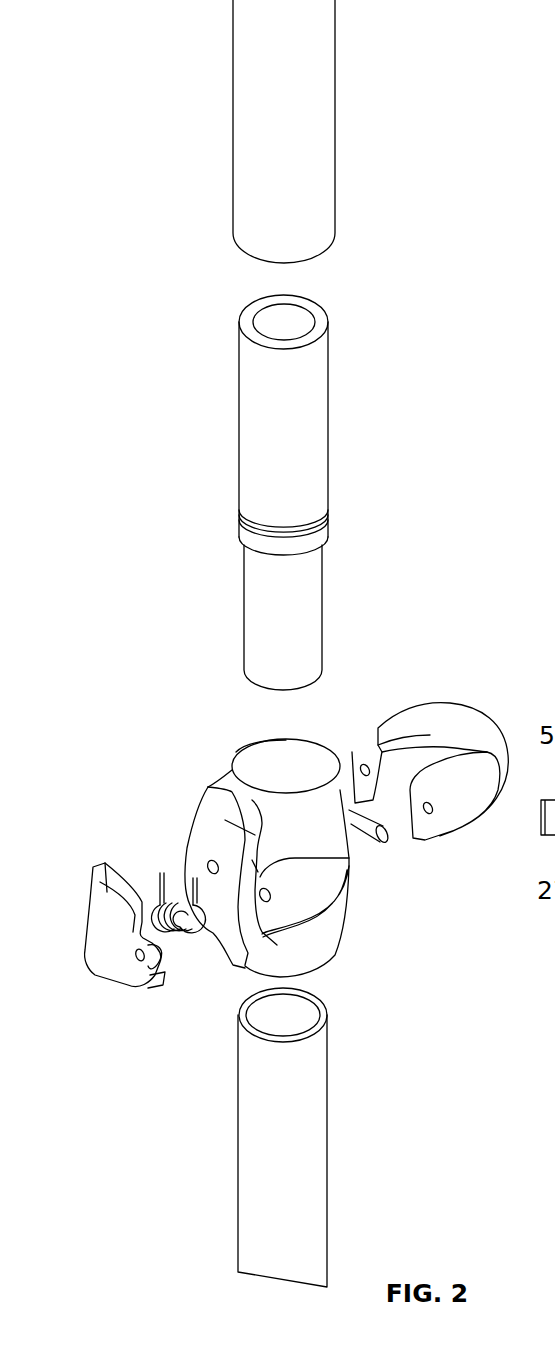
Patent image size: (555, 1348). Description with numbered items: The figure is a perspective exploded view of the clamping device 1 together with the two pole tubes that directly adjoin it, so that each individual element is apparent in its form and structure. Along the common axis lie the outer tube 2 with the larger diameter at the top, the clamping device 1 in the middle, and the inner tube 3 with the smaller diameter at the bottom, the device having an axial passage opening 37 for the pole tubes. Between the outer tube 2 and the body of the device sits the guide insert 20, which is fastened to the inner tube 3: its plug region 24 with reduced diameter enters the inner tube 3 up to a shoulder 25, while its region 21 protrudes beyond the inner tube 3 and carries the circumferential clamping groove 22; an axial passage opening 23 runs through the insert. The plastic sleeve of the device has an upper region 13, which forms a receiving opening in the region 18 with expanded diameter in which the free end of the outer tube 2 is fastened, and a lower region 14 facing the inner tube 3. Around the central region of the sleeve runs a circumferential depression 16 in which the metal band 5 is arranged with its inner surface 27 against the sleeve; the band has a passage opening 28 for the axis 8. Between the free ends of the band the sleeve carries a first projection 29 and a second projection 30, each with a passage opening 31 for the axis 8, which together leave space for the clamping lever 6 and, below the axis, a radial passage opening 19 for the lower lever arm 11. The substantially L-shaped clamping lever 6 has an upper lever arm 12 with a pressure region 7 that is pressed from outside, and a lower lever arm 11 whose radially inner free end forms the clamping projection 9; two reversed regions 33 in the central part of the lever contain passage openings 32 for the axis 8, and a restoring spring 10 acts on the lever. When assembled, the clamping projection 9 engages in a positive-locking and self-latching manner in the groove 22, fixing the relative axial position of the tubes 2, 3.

The clamping device 1 is at (269, 842).
The outer tube 2 is at (297, 113).
The inner tube 3 is at (300, 1122).
The circumferential metal band 5 is at (445, 753).
The clamping lever 6 is at (128, 931).
The pressure region 7 is at (110, 868).
The axis 8 is at (390, 827).
The clamping projection 9 is at (162, 985).
The restoring spring 10 is at (176, 928).
The lower lever arm 11 is at (112, 980).
The upper lever arm 12 is at (107, 897).
The upper region 13 is at (222, 790).
The lower region 14 is at (298, 950).
The circumferential depression 16 is at (310, 897).
The region with expanded diameter 18 is at (298, 767).
The radial passage opening 19 is at (245, 825).
The guide insert 20 is at (285, 486).
The protruding region 21 is at (325, 412).
The clamping groove 22 is at (328, 520).
The axial passage opening 23 is at (286, 320).
The plug region 24 is at (293, 612).
The shoulder 25 is at (243, 545).
The inner surface 27 is at (462, 728).
The passage opening 28 is at (435, 805).
The first projection 29 is at (267, 948).
The second projection 30 is at (200, 858).
The passage opening 31 is at (260, 890).
The passage opening 32 is at (140, 988).
The reversed region 33 is at (150, 962).
The axial passage opening 37 is at (280, 755).